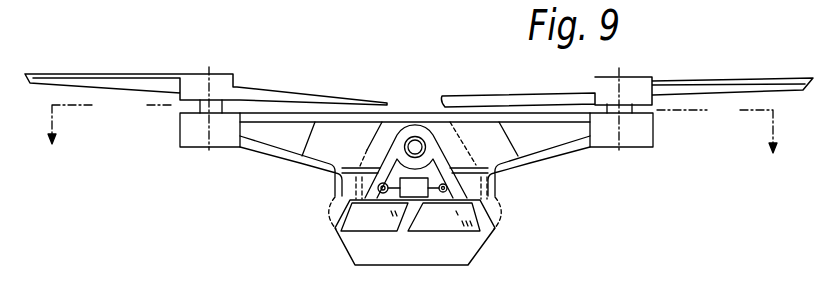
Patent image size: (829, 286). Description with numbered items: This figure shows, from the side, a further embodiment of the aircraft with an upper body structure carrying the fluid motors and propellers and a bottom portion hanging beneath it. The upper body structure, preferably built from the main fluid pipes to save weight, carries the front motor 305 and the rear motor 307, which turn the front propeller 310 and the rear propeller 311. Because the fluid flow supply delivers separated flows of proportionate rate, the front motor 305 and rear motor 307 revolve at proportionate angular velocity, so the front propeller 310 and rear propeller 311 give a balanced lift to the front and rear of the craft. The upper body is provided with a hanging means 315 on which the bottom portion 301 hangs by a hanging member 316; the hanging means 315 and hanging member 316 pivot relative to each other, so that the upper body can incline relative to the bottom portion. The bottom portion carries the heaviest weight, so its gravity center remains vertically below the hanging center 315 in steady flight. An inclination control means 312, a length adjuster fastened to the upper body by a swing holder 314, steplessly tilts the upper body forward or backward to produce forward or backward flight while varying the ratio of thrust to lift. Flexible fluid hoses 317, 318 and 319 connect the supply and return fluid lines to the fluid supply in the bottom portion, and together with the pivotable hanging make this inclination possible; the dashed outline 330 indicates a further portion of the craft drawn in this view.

The fuselage body 301 is at (470, 249).
The front motor 305 is at (181, 133).
The rear motor 307 is at (653, 136).
The front propeller 310 is at (97, 86).
The rear propeller 311 is at (703, 88).
The inclination control means 312 is at (418, 197).
The swing holder 314 is at (383, 194).
The hanging means 315 is at (412, 140).
The hanging member 316 is at (424, 123).
The flexible fluid hose 317 is at (332, 197).
The flexible fluid hose 318 is at (362, 154).
The flexible fluid hose 319 is at (474, 158).
The right skid 330 is at (498, 206).